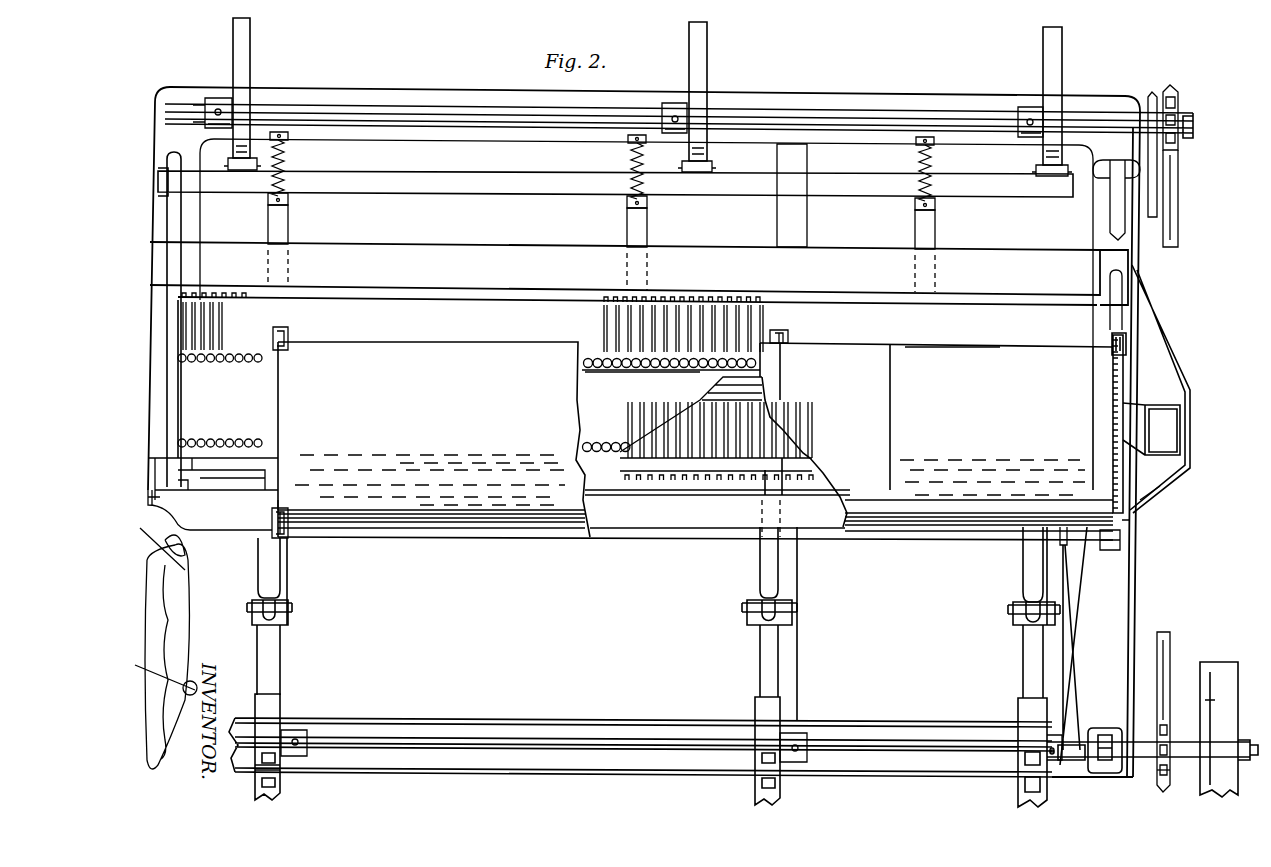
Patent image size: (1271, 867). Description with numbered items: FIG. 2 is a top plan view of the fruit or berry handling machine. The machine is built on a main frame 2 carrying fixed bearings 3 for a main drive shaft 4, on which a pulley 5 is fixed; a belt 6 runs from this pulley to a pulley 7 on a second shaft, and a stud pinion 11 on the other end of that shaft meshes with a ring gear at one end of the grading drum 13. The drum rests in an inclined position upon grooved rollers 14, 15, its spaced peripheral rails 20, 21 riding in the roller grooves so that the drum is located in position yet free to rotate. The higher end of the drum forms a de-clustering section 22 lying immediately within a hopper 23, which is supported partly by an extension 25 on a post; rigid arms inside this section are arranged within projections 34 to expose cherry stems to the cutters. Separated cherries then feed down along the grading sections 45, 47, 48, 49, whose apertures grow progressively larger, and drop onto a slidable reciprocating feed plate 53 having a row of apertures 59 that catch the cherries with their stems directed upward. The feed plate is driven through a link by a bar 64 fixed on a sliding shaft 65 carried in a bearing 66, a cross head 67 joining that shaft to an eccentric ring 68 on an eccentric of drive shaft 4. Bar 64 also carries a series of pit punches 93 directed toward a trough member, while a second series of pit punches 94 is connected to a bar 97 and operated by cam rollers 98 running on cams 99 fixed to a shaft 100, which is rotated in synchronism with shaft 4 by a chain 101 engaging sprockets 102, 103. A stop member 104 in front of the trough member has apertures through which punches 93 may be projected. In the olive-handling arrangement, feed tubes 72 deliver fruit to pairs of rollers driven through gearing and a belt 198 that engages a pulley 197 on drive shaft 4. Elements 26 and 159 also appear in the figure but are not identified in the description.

The main frame 2 is at (905, 98).
The bearings 3 is at (1105, 765).
The main drive shaft 4 is at (360, 738).
The pulley 5 is at (1060, 740).
The belt 6 is at (1080, 612).
The pulley 7 is at (1062, 546).
The stud pinion 11 is at (1118, 548).
The grading drum 13 is at (945, 347).
The grooved roller 14 is at (270, 536).
The grooved roller 15 is at (290, 330).
The peripheral rail 20 is at (783, 396).
The peripheral rail 21 is at (276, 500).
The de-clustering section 22 is at (1028, 348).
The hopper 23 is at (1180, 432).
The extension 25 is at (1168, 358).
The arm 26 is at (1163, 490).
The projections 34 is at (1123, 388).
The grading section 45 is at (875, 517).
The grading section 47 is at (575, 522).
The grading section 48 is at (498, 520).
The grading section 49 is at (392, 520).
The feed plate 53 is at (642, 386).
The apertures 59 is at (232, 438).
The bar 64 is at (226, 464).
The sliding shaft 65 is at (276, 576).
The bearing 66 is at (220, 530).
The cross head 67 is at (292, 620).
The eccentric ring 68 is at (282, 790).
The feed tubes 72 is at (228, 357).
The pit punches 93 is at (775, 455).
The pit punches 94 is at (218, 330).
The bar 97 is at (322, 186).
The cam rollers 98 is at (243, 170).
The cams 99 is at (250, 42).
The shaft 100 is at (193, 110).
The chain 101 is at (1176, 232).
The sprocket 102 is at (1158, 772).
The sprocket 103 is at (1178, 100).
The stop member 104 is at (712, 390).
The spring 159 is at (288, 162).
The pulley 197 is at (1152, 93).
The belt 198 is at (1158, 195).